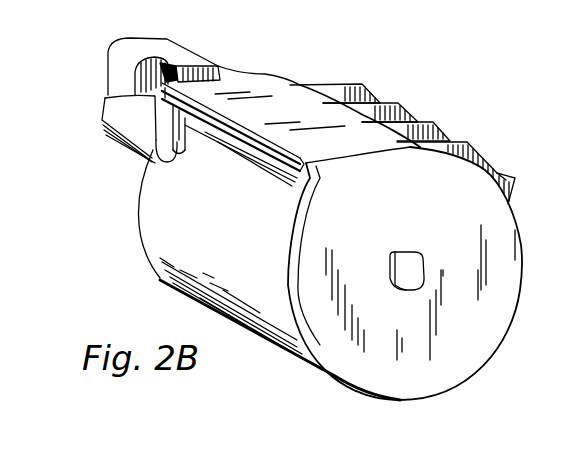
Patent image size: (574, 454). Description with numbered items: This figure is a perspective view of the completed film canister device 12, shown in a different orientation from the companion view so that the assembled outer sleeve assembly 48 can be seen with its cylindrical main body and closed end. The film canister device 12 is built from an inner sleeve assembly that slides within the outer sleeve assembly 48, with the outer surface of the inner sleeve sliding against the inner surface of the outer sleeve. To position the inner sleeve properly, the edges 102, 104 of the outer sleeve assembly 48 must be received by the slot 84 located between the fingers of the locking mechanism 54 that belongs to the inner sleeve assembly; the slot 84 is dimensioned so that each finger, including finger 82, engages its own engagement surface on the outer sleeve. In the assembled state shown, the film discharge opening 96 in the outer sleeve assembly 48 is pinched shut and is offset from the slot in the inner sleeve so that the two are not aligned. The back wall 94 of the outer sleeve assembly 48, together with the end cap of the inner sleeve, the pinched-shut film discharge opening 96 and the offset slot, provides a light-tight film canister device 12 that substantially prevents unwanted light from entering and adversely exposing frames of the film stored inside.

The film canister device 12 is at (430, 79).
The outer sleeve assembly 48 is at (285, 96).
The locking mechanism 54 is at (213, 33).
The finger 82 is at (150, 160).
The slot 84 is at (193, 135).
The back wall 94 is at (437, 237).
The film discharge opening 96 is at (154, 93).
The edge 102 is at (342, 158).
The edge 104 is at (297, 174).